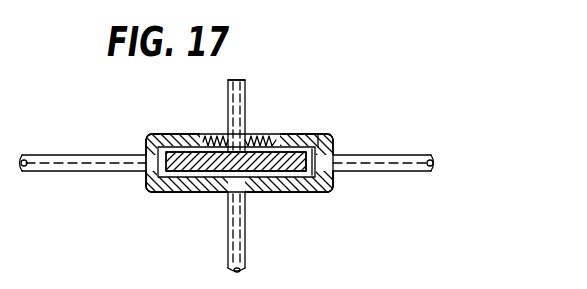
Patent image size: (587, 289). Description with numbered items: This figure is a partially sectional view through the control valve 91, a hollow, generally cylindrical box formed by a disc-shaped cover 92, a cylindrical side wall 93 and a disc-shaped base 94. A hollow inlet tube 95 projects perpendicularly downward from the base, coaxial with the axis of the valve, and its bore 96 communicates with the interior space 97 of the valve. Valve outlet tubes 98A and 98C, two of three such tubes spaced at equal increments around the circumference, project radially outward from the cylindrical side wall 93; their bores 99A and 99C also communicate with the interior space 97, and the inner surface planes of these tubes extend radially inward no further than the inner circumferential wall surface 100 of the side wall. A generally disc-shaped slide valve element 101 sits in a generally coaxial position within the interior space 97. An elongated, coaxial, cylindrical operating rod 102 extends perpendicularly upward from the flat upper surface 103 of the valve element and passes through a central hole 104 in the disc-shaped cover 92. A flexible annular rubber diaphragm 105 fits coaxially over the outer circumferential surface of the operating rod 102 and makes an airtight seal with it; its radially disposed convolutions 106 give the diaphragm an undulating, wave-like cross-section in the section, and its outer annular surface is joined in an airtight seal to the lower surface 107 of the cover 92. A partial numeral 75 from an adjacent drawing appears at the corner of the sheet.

The adjacent figure numeral (partial) 75 is at (5, 1).
The control valve 91 is at (333, 69).
The disc-shaped cover 92 is at (325, 134).
The cylindrical side wall 93 is at (334, 176).
The disc-shaped base 94 is at (280, 196).
The inlet tube 95 is at (226, 224).
The bore 96 is at (240, 271).
The interior space 97 is at (152, 176).
The valve outlet tube 98A is at (412, 154).
The valve outlet tube 98C is at (98, 155).
The bore 99A is at (382, 160).
The bore 99C is at (39, 150).
The inner circumferential wall surface 100 is at (161, 147).
The slide valve element 101 is at (175, 156).
The operating rod 102 is at (247, 82).
The flat upper surface 103 is at (320, 134).
The central hole 104 is at (295, 148).
The rubber diaphragm 105 is at (210, 137).
The convolutions 106 is at (249, 133).
The lower surface 107 is at (312, 180).